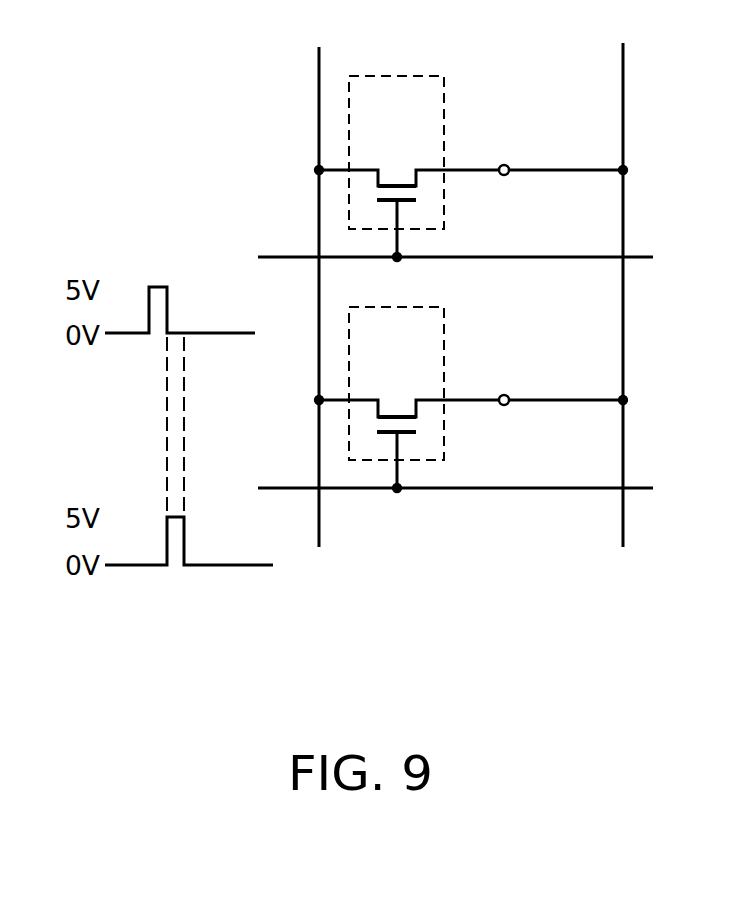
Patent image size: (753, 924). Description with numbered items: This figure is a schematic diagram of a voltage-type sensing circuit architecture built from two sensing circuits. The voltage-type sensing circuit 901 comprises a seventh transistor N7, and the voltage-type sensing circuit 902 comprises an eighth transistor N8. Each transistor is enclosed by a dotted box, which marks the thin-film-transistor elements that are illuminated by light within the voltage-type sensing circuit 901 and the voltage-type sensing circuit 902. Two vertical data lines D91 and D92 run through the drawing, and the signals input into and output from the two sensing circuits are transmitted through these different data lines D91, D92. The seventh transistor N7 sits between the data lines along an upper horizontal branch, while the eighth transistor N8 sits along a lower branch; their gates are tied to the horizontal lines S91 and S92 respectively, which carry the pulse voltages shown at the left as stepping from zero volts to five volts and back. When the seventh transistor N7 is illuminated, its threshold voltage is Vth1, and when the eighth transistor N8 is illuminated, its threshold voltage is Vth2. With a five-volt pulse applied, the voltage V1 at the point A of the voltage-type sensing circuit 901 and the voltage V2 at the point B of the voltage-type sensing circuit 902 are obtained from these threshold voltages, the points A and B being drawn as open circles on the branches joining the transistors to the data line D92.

The voltage-type sensing circuit 901 is at (471, 158).
The voltage-type sensing circuit 902 is at (471, 388).
The seventh transistor N7 is at (395, 167).
The eighth transistor N8 is at (395, 397).
The data line D91 is at (320, 280).
The data line D92 is at (622, 280).
The scan line S91 is at (430, 261).
The scan line S92 is at (431, 491).
The point A is at (504, 152).
The point B is at (504, 383).